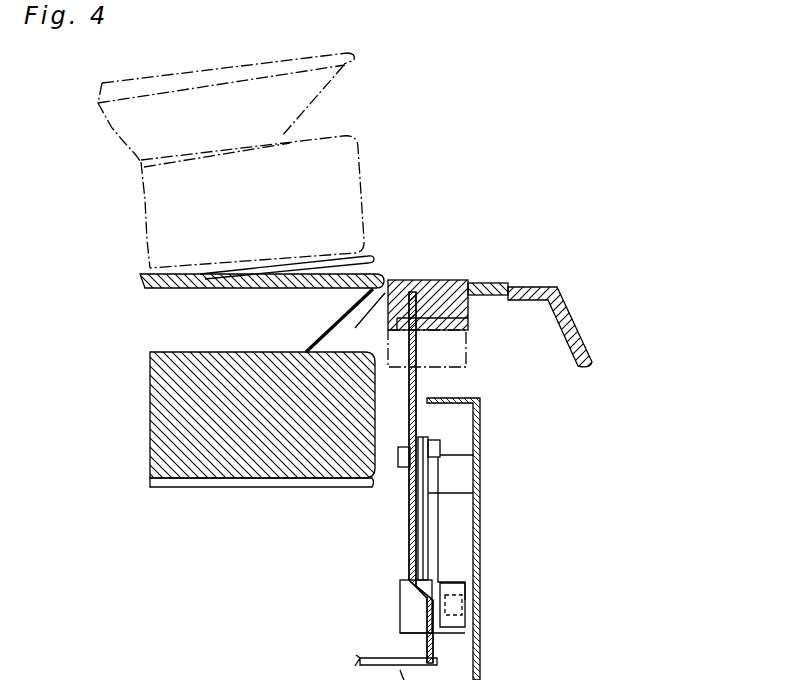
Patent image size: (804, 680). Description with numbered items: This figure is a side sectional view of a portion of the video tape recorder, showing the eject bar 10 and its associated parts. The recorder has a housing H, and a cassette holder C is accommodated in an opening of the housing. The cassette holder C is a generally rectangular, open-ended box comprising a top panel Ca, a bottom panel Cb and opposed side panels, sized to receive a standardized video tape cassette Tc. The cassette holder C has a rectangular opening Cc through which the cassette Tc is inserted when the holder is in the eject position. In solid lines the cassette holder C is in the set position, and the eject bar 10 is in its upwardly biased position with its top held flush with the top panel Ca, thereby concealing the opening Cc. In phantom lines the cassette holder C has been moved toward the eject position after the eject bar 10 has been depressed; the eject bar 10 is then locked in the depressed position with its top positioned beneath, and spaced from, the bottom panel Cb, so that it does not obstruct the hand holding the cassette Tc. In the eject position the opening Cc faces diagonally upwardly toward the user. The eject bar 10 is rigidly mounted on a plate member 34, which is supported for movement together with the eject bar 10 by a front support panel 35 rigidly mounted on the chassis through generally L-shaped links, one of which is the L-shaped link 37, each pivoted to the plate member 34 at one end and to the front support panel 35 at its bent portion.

The cassette holder C is at (116, 150).
The top panel Ca is at (162, 76).
The bottom panel Cb is at (332, 262).
The opening Cc is at (336, 111).
The cassette Tc is at (158, 200).
The eject bar 10 is at (452, 283).
The housing H is at (578, 306).
The plate member 34 is at (418, 385).
The front support panel 35 is at (479, 517).
The L-shaped link 37 is at (435, 550).